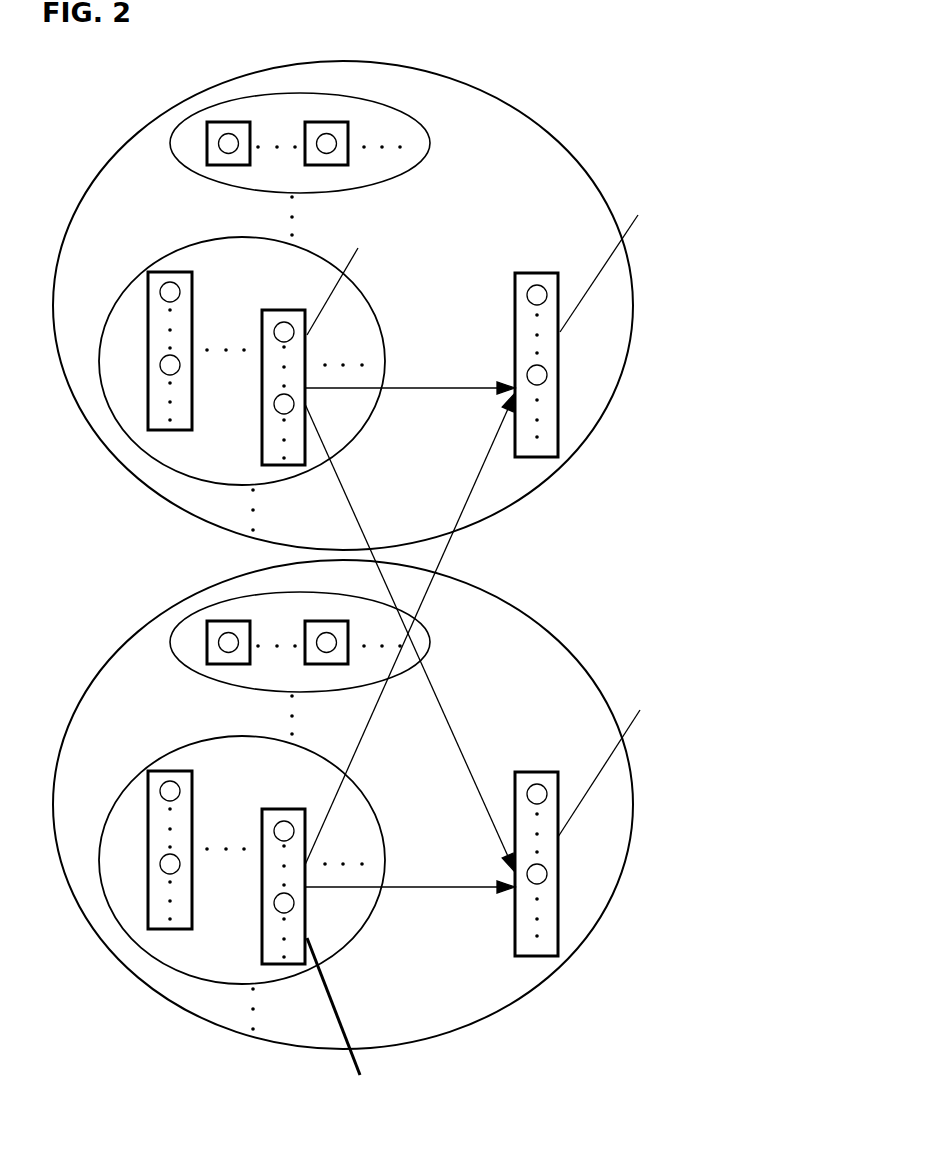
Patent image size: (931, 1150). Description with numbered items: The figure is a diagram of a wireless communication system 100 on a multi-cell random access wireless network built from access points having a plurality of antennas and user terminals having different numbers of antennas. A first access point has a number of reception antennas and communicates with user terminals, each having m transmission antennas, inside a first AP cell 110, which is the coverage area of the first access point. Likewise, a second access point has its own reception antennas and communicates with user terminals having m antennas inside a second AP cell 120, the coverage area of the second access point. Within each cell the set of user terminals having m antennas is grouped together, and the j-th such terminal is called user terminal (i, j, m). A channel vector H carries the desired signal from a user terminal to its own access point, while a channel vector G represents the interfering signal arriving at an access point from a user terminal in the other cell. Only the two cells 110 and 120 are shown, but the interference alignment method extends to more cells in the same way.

The wireless communication system 100 is at (534, 32).
The first AP cell 110 is at (632, 305).
The second AP cell 120 is at (632, 805).